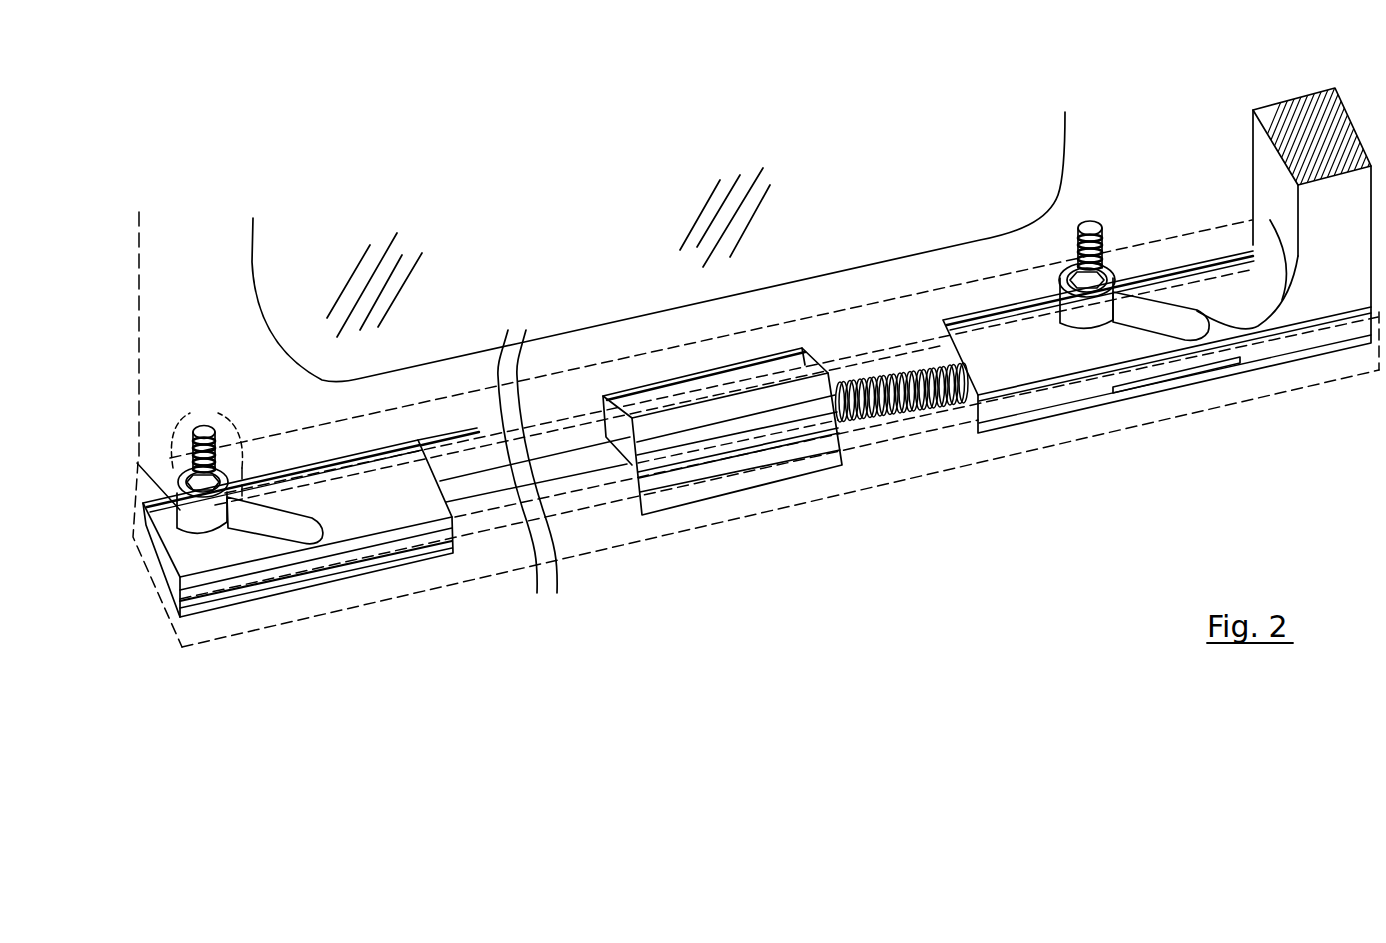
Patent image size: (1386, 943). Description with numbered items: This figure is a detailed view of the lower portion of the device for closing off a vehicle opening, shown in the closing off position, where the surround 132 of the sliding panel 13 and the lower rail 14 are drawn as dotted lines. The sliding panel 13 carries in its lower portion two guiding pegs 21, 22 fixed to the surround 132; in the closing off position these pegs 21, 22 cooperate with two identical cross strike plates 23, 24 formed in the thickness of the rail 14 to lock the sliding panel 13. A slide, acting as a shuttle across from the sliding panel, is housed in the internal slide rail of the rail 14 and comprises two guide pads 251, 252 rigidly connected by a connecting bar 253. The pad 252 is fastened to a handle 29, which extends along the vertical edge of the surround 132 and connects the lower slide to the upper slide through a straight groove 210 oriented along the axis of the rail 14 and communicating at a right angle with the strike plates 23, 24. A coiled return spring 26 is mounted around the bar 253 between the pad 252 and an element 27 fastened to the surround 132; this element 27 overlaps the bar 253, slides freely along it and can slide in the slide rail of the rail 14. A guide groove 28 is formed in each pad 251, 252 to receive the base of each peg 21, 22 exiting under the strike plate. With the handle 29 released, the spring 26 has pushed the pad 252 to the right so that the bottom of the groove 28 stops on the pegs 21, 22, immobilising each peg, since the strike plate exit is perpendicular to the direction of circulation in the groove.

The sliding panel 13 is at (292, 258).
The surround 132 is at (197, 248).
The rail 14 is at (227, 637).
The guiding peg 21 is at (182, 505).
The guiding peg 22 is at (1112, 262).
The cross strike plate 23 is at (181, 478).
The cross strike plate 24 is at (1060, 270).
The guide pad 251 is at (177, 577).
The guide pad 252 is at (1047, 410).
The connecting bar 253 is at (487, 440).
The coiled return spring 26 is at (943, 405).
The element 27 is at (677, 440).
The guide groove 28 is at (293, 543).
The handle 29 is at (1341, 273).
The straight groove 210 is at (872, 425).